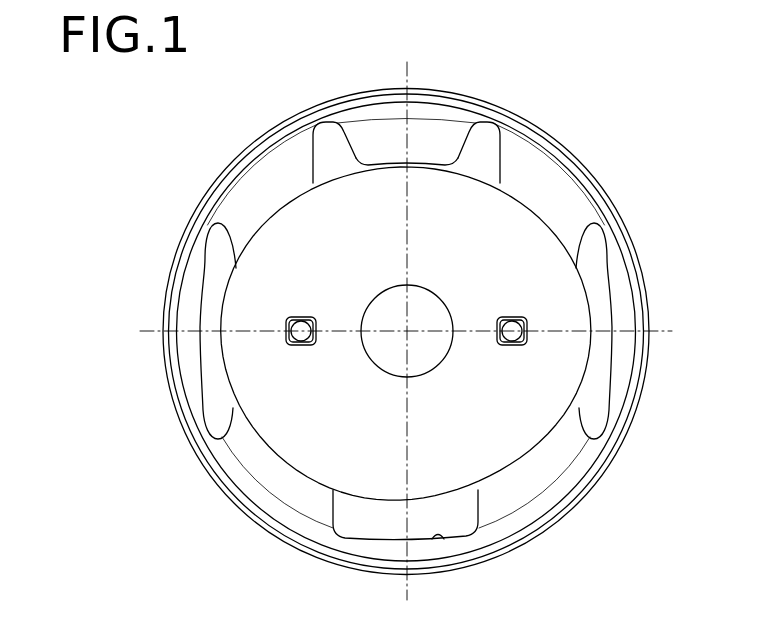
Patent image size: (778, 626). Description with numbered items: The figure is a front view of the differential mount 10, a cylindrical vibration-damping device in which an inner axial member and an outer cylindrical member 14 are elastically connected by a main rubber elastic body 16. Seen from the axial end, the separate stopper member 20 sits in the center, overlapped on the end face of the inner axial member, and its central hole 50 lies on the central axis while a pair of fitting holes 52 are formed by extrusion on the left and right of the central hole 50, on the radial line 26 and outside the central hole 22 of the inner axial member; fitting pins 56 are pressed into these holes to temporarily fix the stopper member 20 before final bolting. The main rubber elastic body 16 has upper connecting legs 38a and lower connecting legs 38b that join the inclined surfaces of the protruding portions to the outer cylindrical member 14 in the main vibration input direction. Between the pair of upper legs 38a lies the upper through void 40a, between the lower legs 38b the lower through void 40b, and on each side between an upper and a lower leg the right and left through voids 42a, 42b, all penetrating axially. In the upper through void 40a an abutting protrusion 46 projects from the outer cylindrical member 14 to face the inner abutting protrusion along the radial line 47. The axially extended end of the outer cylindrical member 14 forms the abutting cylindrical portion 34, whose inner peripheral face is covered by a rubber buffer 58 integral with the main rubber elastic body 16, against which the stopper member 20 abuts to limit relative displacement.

The differential mount 10 is at (628, 110).
The outer cylindrical member 14 is at (421, 318).
The main rubber elastic body 16 is at (340, 95).
The stopper member 20 is at (536, 468).
The central hole 22 is at (377, 351).
The radial line 26 is at (660, 330).
The abutting cylindrical portion 34 is at (213, 198).
The upper connecting leg 38a is at (258, 200).
The lower connecting leg 38b is at (277, 487).
The upper through void 40a is at (489, 180).
The lower through void 40b is at (438, 538).
The right through void 42a is at (610, 386).
The left through void 42b is at (200, 397).
The abutting protrusion 46 is at (392, 146).
The radial line 47 is at (414, 74).
The central hole 50 is at (389, 448).
The fitting hole 52 is at (294, 340).
The fitting pin 56 is at (405, 353).
The rubber buffer 58 is at (161, 331).